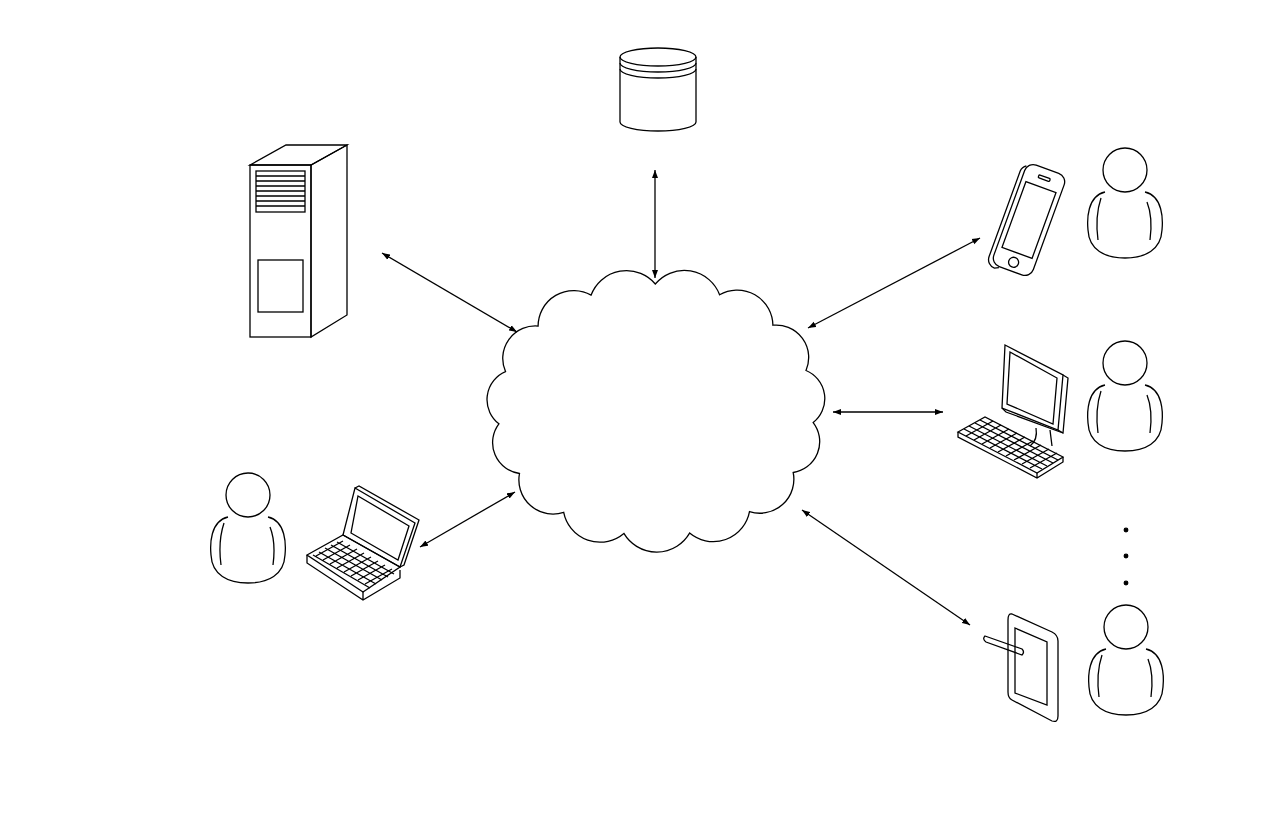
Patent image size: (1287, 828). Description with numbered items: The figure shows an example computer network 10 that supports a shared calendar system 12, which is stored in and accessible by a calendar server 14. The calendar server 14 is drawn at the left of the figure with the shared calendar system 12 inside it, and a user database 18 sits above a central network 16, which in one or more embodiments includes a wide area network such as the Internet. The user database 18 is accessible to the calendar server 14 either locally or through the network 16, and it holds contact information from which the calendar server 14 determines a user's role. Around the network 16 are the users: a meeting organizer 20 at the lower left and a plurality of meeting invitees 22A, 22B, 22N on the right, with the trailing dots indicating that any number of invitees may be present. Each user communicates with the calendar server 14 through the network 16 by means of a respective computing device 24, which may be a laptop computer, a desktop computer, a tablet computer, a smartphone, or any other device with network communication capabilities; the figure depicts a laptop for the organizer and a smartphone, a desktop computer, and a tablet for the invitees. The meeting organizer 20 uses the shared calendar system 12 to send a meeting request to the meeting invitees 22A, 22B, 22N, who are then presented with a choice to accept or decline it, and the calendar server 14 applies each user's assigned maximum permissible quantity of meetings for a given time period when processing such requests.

The computer network 10 is at (935, 106).
The shared calendar system 12 is at (258, 284).
The calendar server 14 is at (347, 202).
The network 16 is at (654, 540).
The user database 18 is at (697, 96).
The meeting organizer 20 is at (212, 534).
The meeting invitee 22A is at (1162, 207).
The meeting invitee 22B is at (1162, 400).
The meeting invitee 22N is at (1162, 663).
The computing device 24 is at (378, 590).